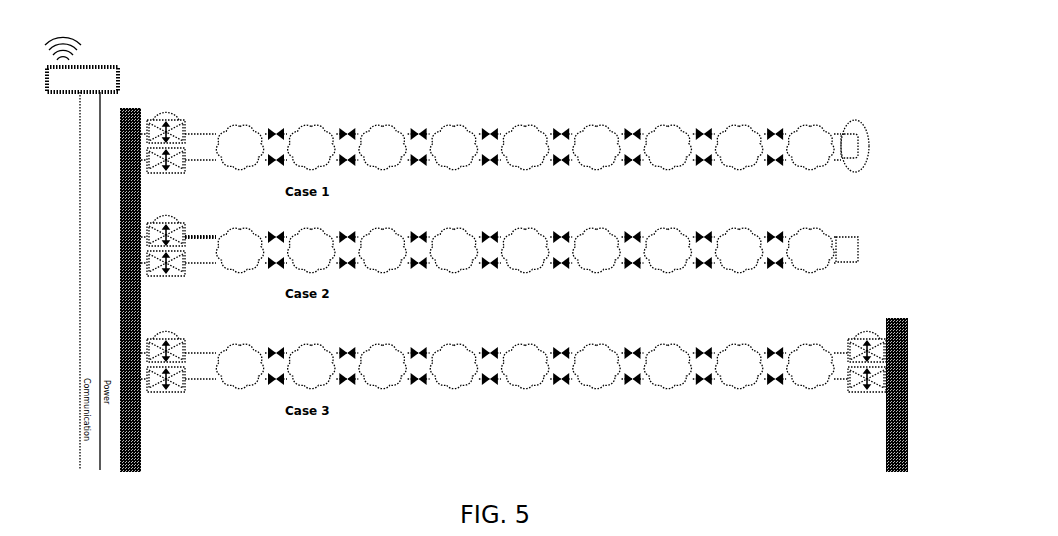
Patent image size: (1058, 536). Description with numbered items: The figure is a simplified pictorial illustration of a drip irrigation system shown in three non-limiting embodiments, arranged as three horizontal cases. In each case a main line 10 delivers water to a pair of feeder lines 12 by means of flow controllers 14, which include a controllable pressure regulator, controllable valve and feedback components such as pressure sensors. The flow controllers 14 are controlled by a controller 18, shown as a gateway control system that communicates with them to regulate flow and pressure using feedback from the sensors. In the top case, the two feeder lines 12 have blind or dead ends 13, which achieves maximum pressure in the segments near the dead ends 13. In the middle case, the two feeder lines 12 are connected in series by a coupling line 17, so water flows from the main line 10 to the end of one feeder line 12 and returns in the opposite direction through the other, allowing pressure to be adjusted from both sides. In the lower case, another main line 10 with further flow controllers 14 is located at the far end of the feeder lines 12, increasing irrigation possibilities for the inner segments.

The main line 10 is at (130, 462).
The feeder line 12 is at (403, 160).
The dead end 13 is at (859, 143).
The flow controller 14 is at (171, 395).
The coupling line 17 is at (859, 250).
The controller 18 is at (118, 68).